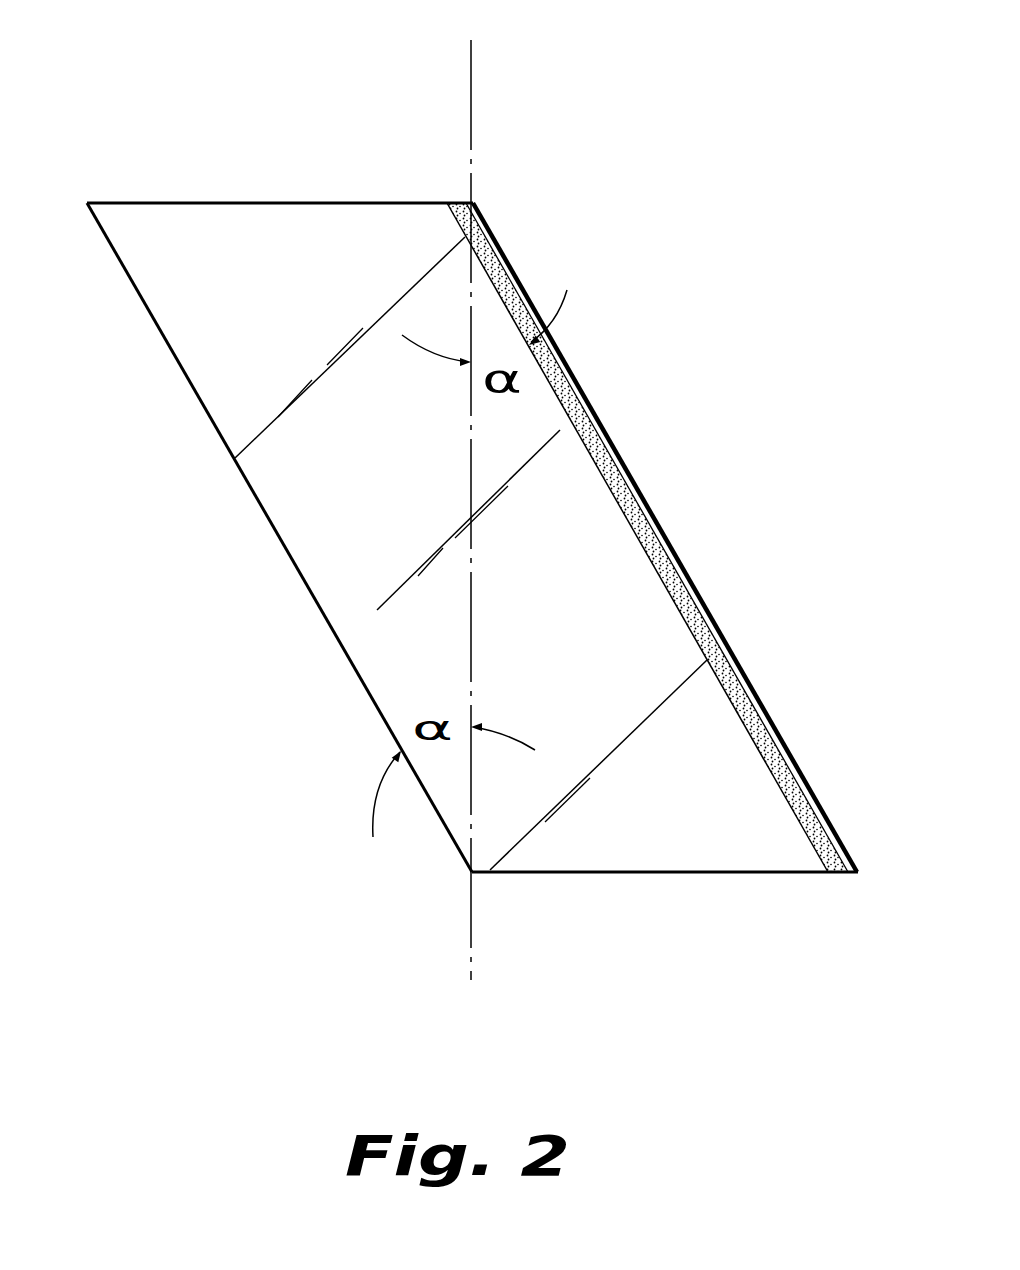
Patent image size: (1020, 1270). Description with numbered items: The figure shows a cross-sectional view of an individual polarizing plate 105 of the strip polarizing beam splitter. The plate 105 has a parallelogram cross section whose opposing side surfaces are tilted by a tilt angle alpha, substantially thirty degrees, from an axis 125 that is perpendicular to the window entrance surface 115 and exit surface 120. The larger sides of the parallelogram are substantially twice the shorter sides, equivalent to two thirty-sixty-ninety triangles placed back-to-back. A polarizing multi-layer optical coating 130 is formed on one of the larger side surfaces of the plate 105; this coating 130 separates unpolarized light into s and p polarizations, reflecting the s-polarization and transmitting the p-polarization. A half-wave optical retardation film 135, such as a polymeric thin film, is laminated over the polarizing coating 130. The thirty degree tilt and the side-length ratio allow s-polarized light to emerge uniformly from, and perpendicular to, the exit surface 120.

The polarizing plate 105 is at (322, 505).
The window entrance surface 115 is at (177, 203).
The window exit surface 120 is at (627, 873).
The axis 125 is at (472, 83).
The polarizing multi-layer optical coating 130 is at (800, 812).
The half-wave optical retardation film 135 is at (796, 764).